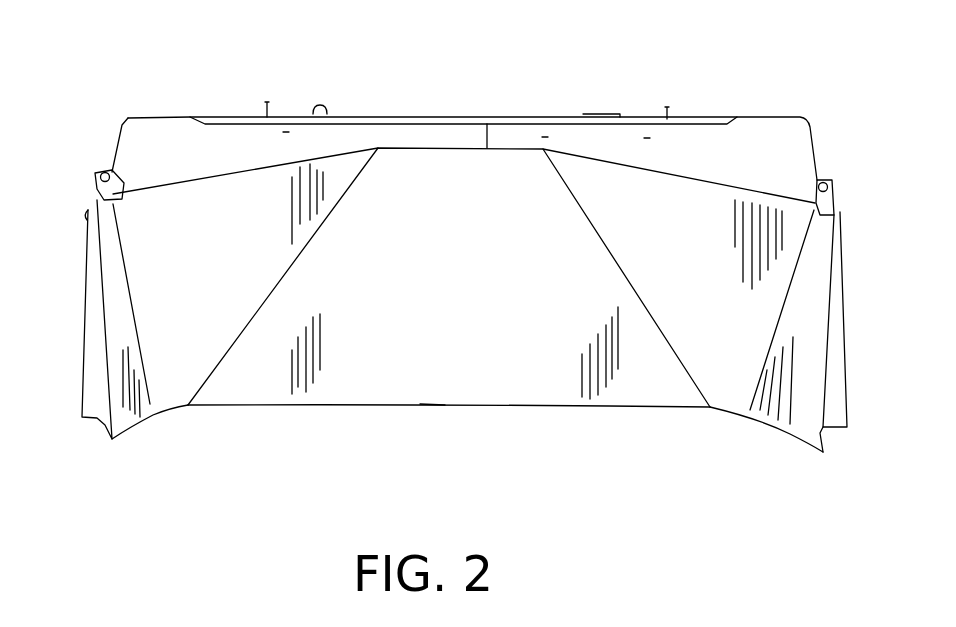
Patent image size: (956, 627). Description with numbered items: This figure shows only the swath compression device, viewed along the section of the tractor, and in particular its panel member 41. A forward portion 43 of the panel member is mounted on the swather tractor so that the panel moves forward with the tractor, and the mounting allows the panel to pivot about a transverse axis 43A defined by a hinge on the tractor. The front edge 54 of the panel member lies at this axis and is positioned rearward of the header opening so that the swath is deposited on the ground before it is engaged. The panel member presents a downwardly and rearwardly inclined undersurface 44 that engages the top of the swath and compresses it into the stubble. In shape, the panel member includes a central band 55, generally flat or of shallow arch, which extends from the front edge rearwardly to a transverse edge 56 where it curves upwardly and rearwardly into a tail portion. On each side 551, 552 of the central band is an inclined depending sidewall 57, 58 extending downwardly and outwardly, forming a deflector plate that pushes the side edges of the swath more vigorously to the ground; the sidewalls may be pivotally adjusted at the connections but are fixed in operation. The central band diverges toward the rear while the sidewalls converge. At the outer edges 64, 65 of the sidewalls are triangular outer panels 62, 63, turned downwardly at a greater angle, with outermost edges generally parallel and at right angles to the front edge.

The panel member 41 is at (514, 119).
The forward portion 43 is at (602, 129).
The transverse axis 43A is at (438, 108).
The undersurface 44 is at (479, 374).
The front edge 54 is at (480, 117).
The central band 55 is at (459, 261).
The side of the band 551 is at (332, 202).
The side of the band 552 is at (577, 207).
The transverse edge 56 is at (428, 397).
The inclined depending sidewall 57 is at (199, 271).
The inclined depending sidewall 58 is at (669, 262).
The outer panel 62 is at (110, 417).
The outer panel 63 is at (797, 412).
The outer edge 64 is at (130, 321).
The outer edge 65 is at (765, 344).